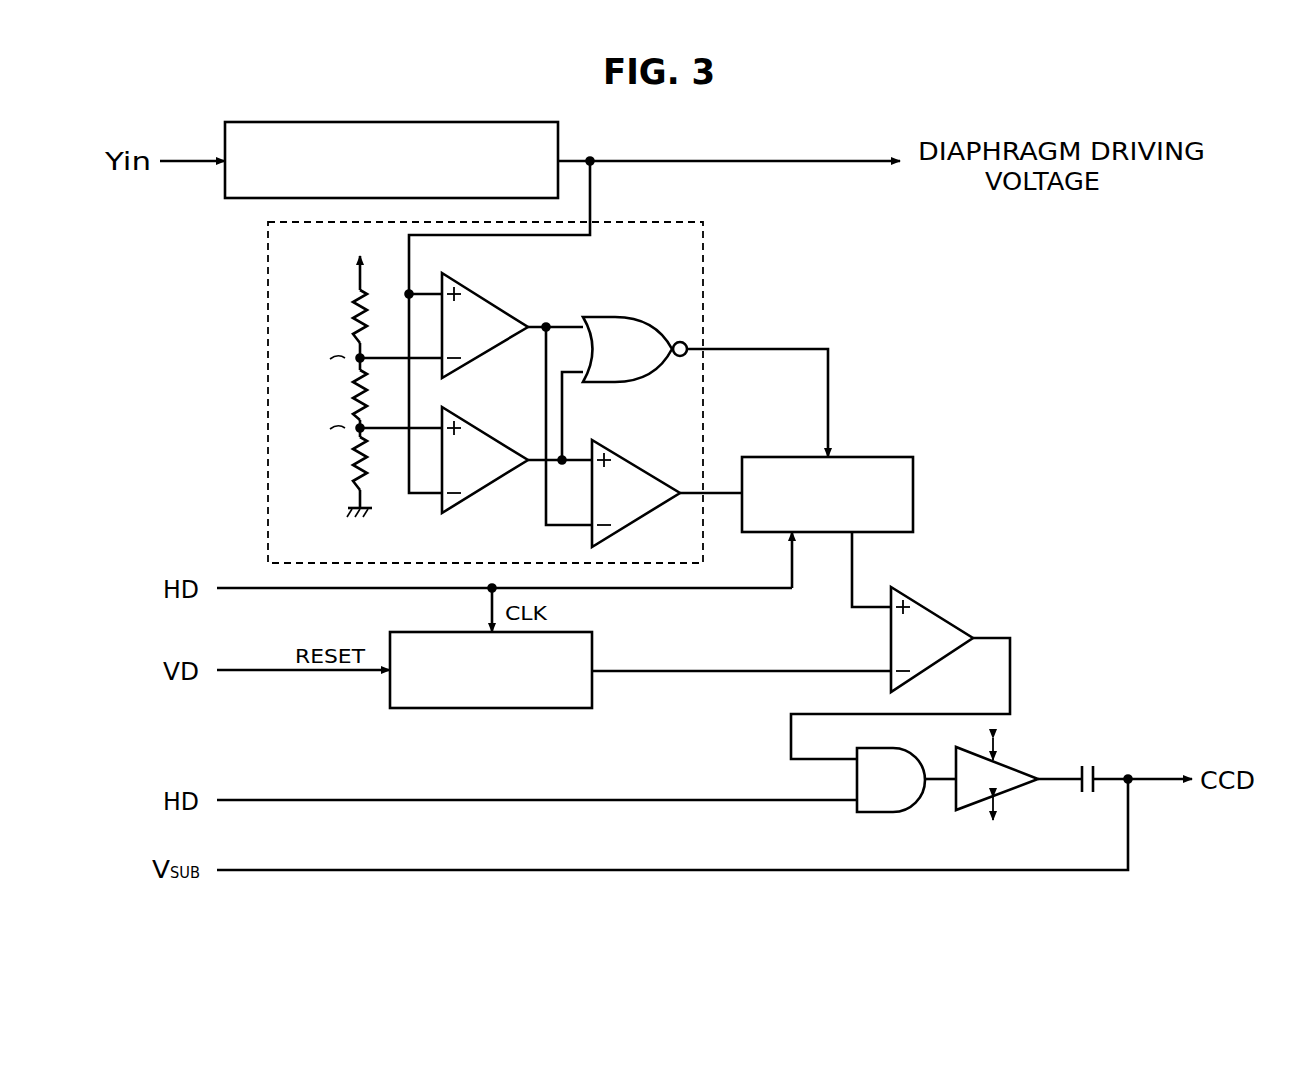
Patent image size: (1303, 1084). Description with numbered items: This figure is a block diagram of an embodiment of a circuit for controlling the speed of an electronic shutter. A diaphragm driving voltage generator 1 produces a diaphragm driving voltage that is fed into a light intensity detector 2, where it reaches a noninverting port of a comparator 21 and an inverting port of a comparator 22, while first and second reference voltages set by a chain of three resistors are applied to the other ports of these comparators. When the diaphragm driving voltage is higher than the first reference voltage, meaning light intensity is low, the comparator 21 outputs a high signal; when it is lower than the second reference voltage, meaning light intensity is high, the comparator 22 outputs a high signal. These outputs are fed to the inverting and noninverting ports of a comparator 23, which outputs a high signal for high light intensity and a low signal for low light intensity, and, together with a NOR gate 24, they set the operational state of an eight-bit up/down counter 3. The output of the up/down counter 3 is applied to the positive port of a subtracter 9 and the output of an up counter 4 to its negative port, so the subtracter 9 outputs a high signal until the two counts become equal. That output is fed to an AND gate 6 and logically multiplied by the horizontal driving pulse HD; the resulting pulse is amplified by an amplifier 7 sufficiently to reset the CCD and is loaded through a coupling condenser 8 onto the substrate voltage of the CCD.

The diaphragm driving voltage generator 1 is at (558, 122).
The light intensity detector 2 is at (703, 305).
The up/down counter 3 is at (913, 457).
The up counter 4 is at (402, 708).
The AND gate 6 is at (858, 812).
The amplifier 7 is at (957, 810).
The coupling condenser 8 is at (1090, 794).
The subtracter 9 is at (938, 614).
The comparator 21 is at (518, 287).
The comparator 22 is at (487, 488).
The comparator 23 is at (638, 467).
The NOR gate 24 is at (628, 318).